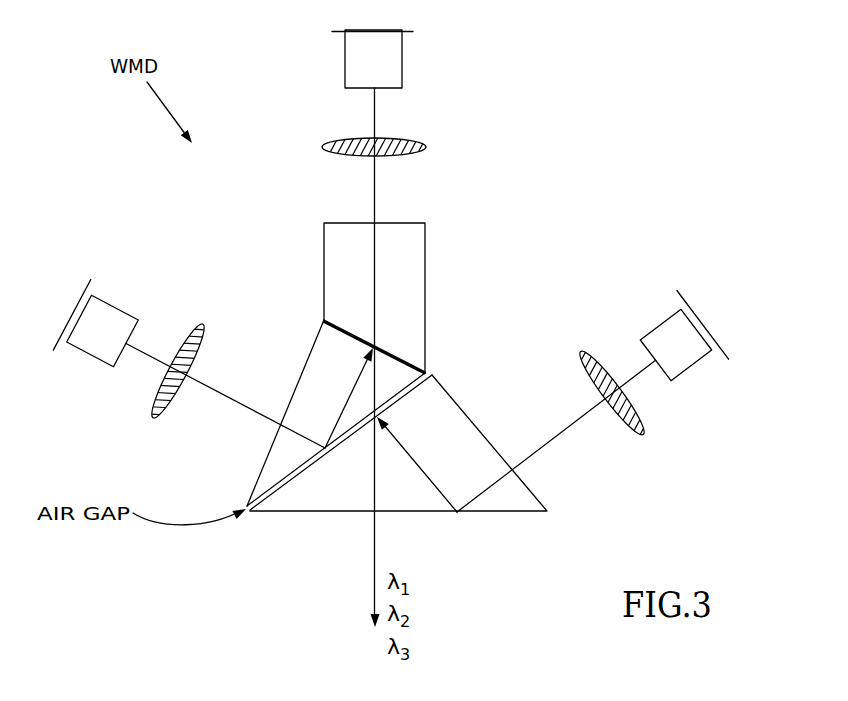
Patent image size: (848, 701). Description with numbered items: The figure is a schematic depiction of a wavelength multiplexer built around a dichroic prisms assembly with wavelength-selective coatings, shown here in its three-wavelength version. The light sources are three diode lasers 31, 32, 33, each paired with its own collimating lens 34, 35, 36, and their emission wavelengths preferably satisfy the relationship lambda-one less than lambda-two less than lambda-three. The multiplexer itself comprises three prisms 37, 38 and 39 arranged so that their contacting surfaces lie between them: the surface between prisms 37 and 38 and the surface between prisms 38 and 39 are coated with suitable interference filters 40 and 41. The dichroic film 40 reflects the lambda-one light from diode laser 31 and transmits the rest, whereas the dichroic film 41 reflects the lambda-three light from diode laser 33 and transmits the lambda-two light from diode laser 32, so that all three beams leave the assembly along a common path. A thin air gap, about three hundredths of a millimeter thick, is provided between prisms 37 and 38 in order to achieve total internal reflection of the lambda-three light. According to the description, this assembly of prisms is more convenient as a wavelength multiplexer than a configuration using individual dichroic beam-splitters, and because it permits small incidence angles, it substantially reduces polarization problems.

The diode laser 31 is at (662, 308).
The diode laser 32 is at (402, 65).
The diode laser 33 is at (112, 300).
The collimating lens 34 is at (593, 352).
The collimating lens 35 is at (402, 139).
The collimating lens 36 is at (187, 325).
The prism 37 is at (452, 448).
The prism 38 is at (320, 380).
The prism 39 is at (402, 267).
The interference filter 40 is at (310, 488).
The interference filter 41 is at (403, 339).